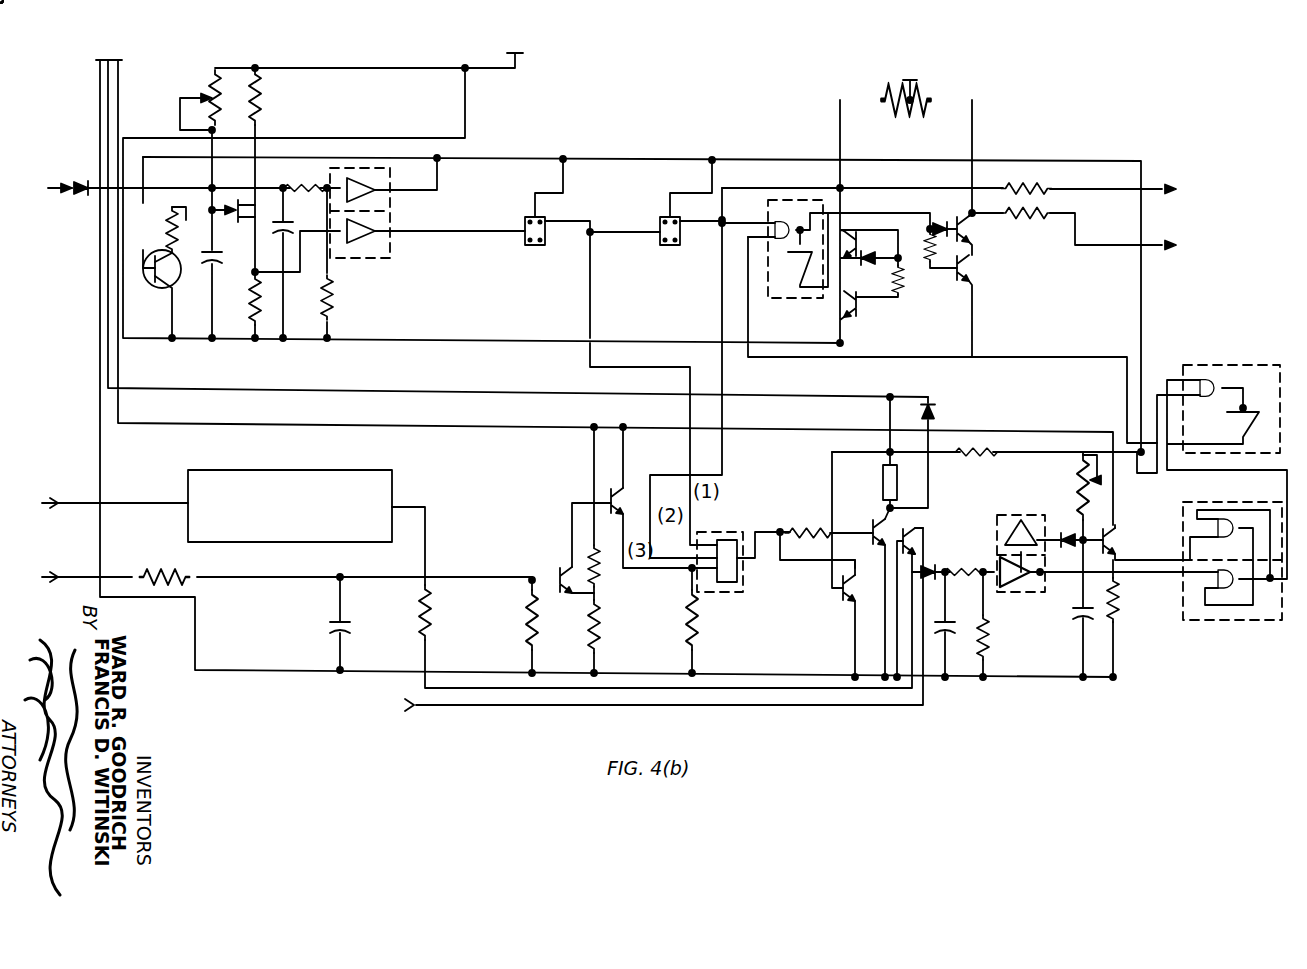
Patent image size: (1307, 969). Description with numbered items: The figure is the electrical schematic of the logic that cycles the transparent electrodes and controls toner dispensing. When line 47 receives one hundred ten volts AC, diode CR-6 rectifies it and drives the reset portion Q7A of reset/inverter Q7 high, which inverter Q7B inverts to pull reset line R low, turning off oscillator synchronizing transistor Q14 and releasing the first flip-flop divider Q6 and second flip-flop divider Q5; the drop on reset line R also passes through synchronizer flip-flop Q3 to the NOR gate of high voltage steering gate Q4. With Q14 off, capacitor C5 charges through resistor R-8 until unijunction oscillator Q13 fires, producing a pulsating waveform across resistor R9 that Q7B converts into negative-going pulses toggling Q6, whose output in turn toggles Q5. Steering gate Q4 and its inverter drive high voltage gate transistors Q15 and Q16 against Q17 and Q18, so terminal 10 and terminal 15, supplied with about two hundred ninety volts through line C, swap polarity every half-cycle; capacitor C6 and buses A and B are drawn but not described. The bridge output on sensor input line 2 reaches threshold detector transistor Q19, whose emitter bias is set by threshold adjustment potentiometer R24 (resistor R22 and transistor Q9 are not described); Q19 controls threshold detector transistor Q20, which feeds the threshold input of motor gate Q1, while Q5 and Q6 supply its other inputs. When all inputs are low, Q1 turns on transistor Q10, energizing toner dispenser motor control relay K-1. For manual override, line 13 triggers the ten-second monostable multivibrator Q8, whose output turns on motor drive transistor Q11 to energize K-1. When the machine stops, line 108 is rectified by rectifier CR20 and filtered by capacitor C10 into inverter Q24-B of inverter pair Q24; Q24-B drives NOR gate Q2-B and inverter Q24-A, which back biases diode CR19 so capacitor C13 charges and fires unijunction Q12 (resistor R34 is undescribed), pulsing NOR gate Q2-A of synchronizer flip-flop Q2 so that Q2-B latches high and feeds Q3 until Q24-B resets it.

The supply bus lines B is at (118, 88).
The terminal A is at (505, 72).
The line C is at (918, 82).
The reset line R is at (646, 160).
The line 47 is at (43, 188).
The diode CR-6 is at (80, 180).
The resistor R-8 is at (180, 118).
The unijunction oscillator Q13 is at (233, 224).
The capacitor C5 is at (226, 262).
The oscillator synchronizing transistor Q14 is at (172, 280).
The resistor R9 is at (240, 300).
The capacitor C6 is at (290, 232).
The reset/inverter Q7 is at (398, 250).
The reset portion Q7A is at (218, 101).
The inverter Q7B is at (370, 262).
The first flip-flop divider Q6 is at (525, 240).
The second flip-flop divider Q5 is at (660, 236).
The terminal 10 is at (1022, 193).
The terminal 15 is at (1086, 233).
The high voltage steering gate Q4 is at (784, 198).
The high voltage gate transistor Q17 is at (850, 258).
The high voltage gate transistor Q18 is at (852, 304).
The high voltage gate transistor Q15 is at (966, 228).
The high voltage gate transistor Q16 is at (968, 266).
The synchronizer flip-flop Q3 is at (1188, 365).
The line 13 is at (101, 502).
The sensor input line 2 is at (277, 576).
The ten-second monostable multivibrator Q8 is at (395, 490).
The threshold detector transistor Q19 is at (560, 568).
The threshold adjustment potentiometer R24 is at (602, 578).
The resistor R22 is at (603, 626).
The threshold detector transistor Q20 is at (620, 490).
The motor gate Q1 is at (745, 586).
The transistor Q9 is at (854, 564).
The transistor Q10 is at (873, 520).
The toner dispenser motor control relay K-1 is at (883, 478).
The motor drive transistor Q11 is at (929, 602).
The line 108 is at (646, 621).
The rectifier CR20 is at (930, 572).
The capacitor C10 is at (965, 620).
The inverter pair Q24 is at (990, 530).
The inverter Q24-A is at (1006, 526).
The inverter Q24-B is at (1036, 590).
The diode CR19 is at (1076, 500).
The capacitor C13 is at (1080, 622).
The unijunction Q12 is at (1114, 548).
The resistor R34 is at (1120, 596).
The synchronizer flip-flop Q2 is at (1250, 502).
The NOR gate Q2-A is at (1185, 518).
The NOR gate Q2-B is at (1190, 620).